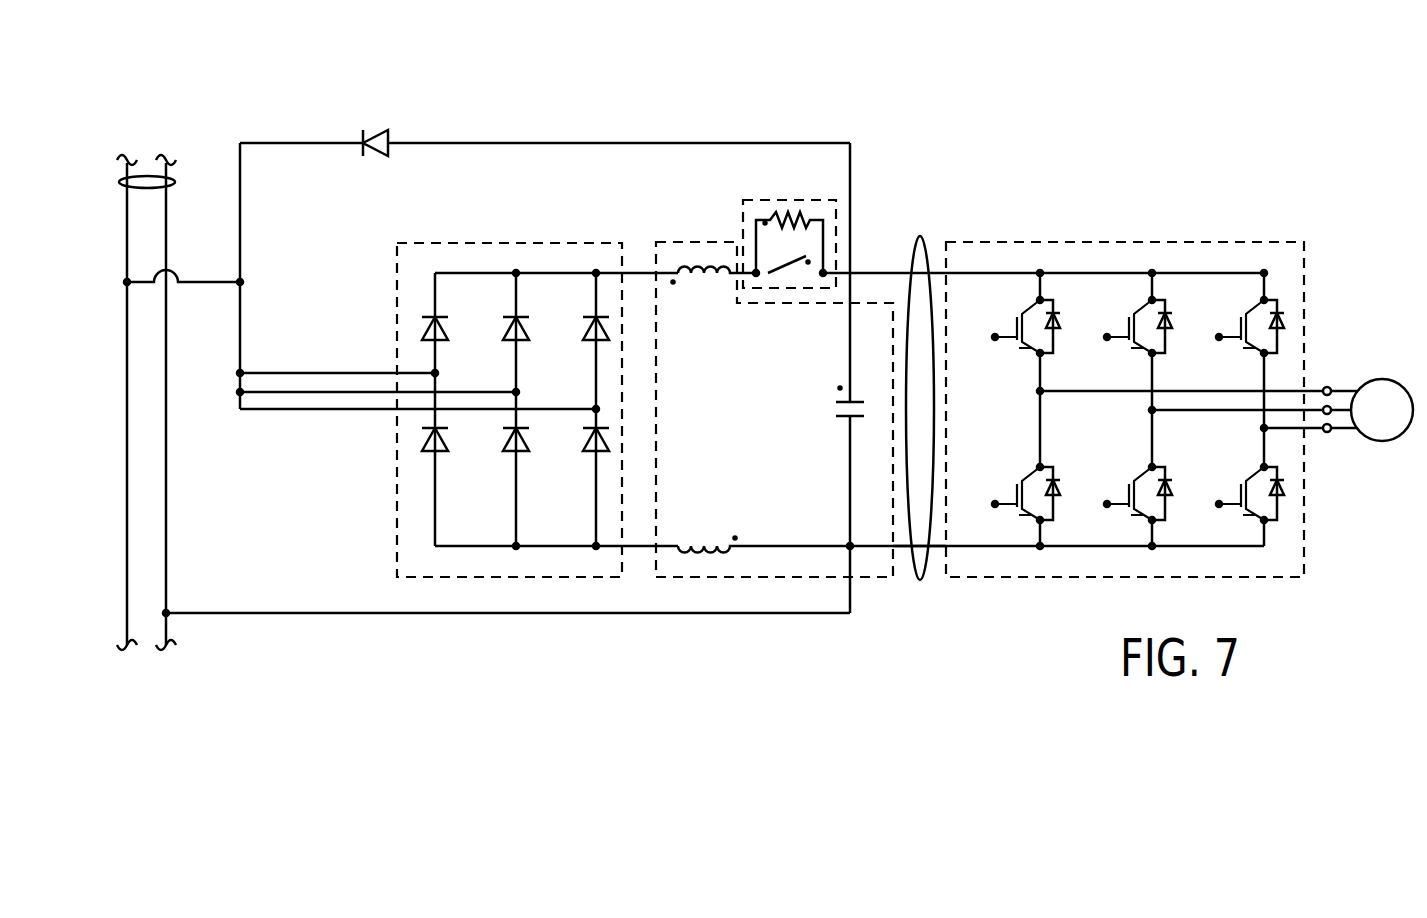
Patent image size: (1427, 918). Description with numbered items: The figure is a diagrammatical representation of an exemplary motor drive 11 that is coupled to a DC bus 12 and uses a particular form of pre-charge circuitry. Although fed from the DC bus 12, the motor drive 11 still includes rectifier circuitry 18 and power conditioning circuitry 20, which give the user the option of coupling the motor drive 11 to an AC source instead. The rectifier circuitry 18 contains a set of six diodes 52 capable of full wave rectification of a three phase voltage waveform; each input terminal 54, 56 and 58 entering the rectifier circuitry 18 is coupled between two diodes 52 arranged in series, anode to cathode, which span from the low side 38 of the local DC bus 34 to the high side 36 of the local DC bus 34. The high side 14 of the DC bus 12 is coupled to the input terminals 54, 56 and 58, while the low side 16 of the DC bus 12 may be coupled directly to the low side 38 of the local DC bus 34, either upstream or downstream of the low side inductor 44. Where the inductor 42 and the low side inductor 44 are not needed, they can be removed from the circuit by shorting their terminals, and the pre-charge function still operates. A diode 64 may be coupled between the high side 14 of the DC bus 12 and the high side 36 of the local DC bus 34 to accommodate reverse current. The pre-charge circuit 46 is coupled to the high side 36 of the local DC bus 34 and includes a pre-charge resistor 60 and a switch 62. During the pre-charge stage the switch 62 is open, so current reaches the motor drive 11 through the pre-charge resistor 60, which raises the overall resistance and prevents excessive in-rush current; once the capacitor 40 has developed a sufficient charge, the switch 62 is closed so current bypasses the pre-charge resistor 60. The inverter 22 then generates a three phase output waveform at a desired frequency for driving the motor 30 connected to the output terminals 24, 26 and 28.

The motor drive 11 is at (945, 70).
The DC bus 12 is at (176, 180).
The high side of the DC bus 14 is at (208, 281).
The low side of the DC bus 16 is at (283, 612).
The rectifier circuitry 18 is at (520, 243).
The power conditioning circuitry 20 is at (693, 242).
The inverter 22 is at (1128, 242).
The output terminal 24 is at (1328, 386).
The output terminal 26 is at (1331, 406).
The output terminal 28 is at (1331, 433).
The motor 30 is at (1404, 388).
The local DC bus 34 is at (927, 247).
The high side of the local DC bus 36 is at (893, 271).
The low side of the local DC bus 38 is at (905, 565).
The capacitor 40 is at (845, 418).
The inductor 42 is at (706, 282).
The low side inductor 44 is at (708, 542).
The pre-charge circuit 46 is at (790, 200).
The diodes 52 is at (505, 338).
The input terminal 54 is at (247, 372).
The input terminal 56 is at (243, 386).
The input terminal 58 is at (243, 412).
The pre-charge resistor 60 is at (808, 215).
The switch 62 is at (800, 283).
The diode 64 is at (376, 132).